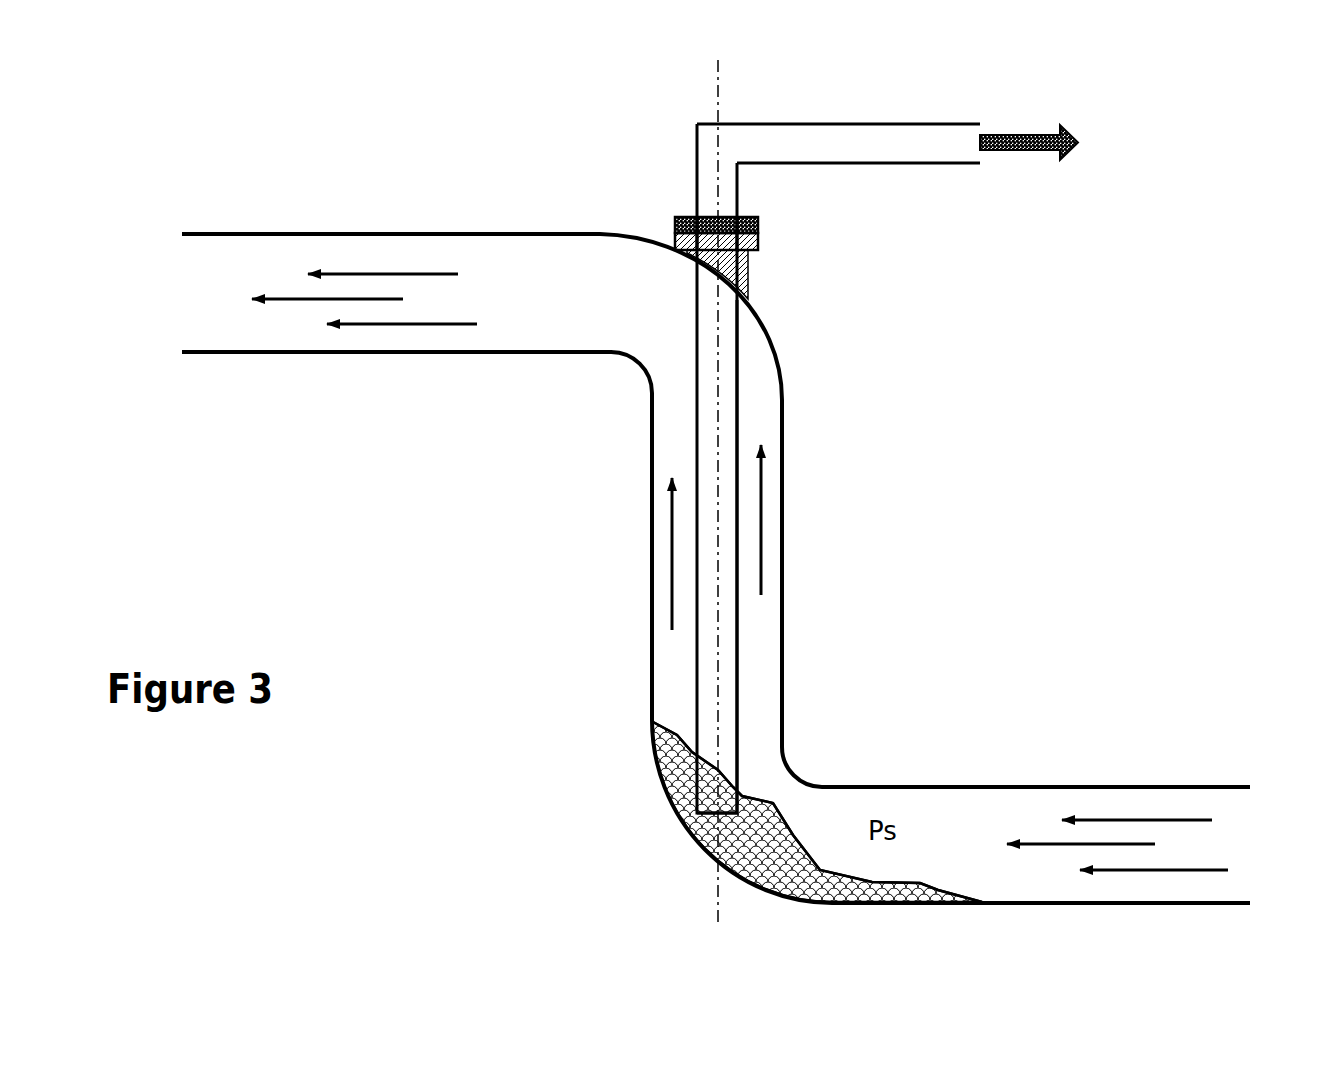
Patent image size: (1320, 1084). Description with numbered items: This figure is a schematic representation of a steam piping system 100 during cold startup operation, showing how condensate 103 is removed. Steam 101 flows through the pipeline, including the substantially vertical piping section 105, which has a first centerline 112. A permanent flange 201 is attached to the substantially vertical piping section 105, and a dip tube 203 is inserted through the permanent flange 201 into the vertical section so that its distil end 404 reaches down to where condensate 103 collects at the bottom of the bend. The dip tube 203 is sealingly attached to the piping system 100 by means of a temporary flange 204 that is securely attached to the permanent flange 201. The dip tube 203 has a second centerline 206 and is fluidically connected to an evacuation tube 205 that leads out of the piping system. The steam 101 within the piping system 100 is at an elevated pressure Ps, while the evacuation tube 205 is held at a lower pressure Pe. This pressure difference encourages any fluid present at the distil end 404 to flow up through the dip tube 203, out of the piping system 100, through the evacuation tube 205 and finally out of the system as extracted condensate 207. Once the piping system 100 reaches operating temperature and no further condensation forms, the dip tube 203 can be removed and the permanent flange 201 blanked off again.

The steam piping system 100 is at (488, 527).
The steam 101 is at (1153, 845).
The condensate 103 is at (795, 811).
The substantially vertical piping section 105 is at (462, 452).
The centerline of substantially vertical piping section 112 is at (682, 491).
The permanent flange 201 is at (754, 287).
The dip tube 203 is at (747, 664).
The temporary flange 204 is at (671, 214).
The evacuation tube 205 is at (838, 120).
The centerline of dip tube 206 is at (688, 878).
The extracted condensate 207 is at (1073, 142).
The distil end of dip tube 404 is at (759, 776).